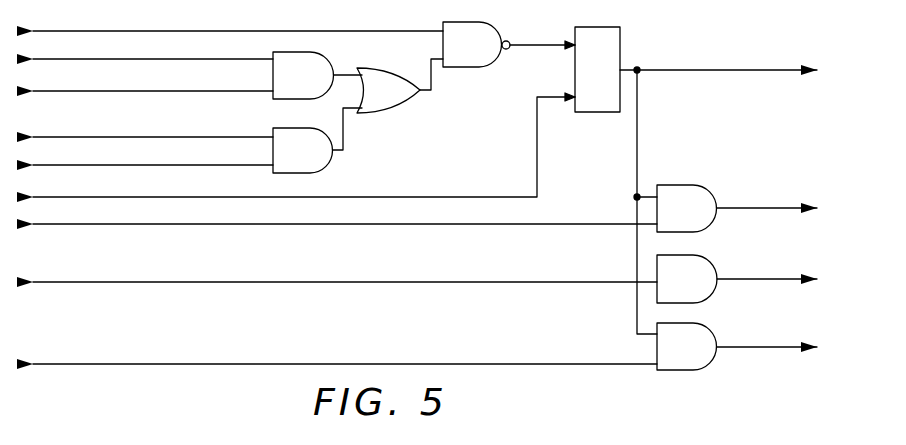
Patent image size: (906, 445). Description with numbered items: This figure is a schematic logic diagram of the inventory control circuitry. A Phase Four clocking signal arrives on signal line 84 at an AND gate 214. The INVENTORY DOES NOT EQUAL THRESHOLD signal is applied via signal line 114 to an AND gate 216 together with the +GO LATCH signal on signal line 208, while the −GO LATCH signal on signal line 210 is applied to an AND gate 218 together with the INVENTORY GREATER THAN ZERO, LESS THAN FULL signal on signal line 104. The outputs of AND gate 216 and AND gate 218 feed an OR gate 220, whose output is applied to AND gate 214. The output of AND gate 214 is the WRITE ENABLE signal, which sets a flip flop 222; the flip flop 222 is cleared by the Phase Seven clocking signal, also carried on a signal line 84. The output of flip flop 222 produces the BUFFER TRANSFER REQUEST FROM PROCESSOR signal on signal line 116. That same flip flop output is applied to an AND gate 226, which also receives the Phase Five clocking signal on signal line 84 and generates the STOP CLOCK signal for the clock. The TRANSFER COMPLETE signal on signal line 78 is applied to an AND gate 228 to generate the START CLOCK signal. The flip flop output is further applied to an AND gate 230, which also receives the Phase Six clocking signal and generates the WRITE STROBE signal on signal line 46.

The signal line 84 is at (310, 31).
The signal line 114 is at (228, 59).
The signal line 208 is at (223, 93).
The signal line 210 is at (209, 137).
The signal line 104 is at (216, 165).
The signal line 78 is at (256, 281).
The AND gate 216 is at (313, 73).
The AND gate 218 is at (305, 152).
The OR gate 220 is at (368, 112).
The AND gate 214 is at (465, 48).
The flip flop 222 is at (615, 48).
The signal line 116 is at (750, 72).
The AND gate 226 is at (692, 205).
The AND gate 228 is at (697, 272).
The AND gate 230 is at (698, 340).
The signal line 46 is at (784, 350).